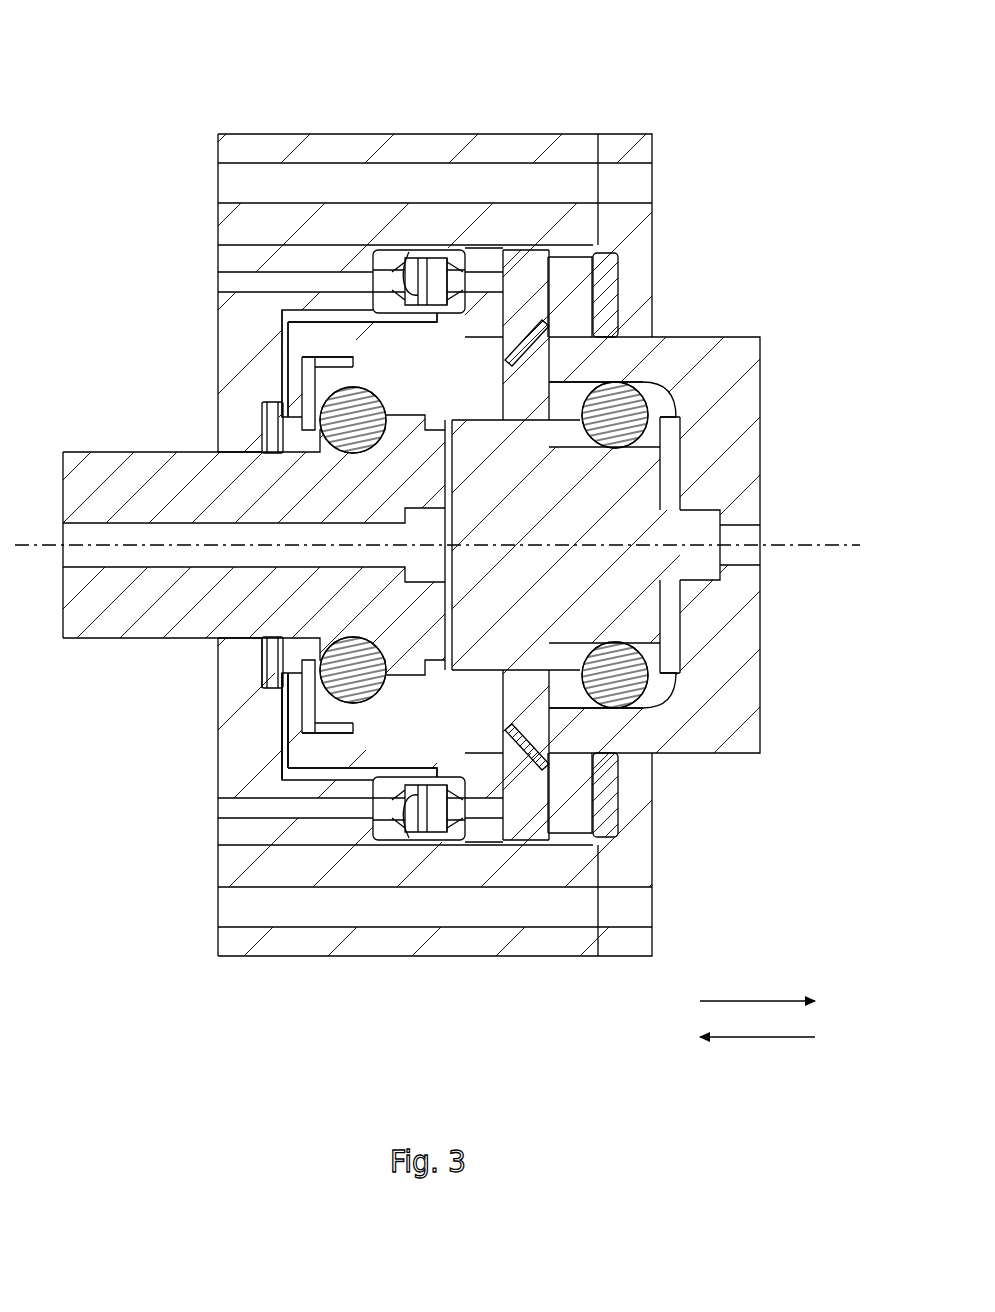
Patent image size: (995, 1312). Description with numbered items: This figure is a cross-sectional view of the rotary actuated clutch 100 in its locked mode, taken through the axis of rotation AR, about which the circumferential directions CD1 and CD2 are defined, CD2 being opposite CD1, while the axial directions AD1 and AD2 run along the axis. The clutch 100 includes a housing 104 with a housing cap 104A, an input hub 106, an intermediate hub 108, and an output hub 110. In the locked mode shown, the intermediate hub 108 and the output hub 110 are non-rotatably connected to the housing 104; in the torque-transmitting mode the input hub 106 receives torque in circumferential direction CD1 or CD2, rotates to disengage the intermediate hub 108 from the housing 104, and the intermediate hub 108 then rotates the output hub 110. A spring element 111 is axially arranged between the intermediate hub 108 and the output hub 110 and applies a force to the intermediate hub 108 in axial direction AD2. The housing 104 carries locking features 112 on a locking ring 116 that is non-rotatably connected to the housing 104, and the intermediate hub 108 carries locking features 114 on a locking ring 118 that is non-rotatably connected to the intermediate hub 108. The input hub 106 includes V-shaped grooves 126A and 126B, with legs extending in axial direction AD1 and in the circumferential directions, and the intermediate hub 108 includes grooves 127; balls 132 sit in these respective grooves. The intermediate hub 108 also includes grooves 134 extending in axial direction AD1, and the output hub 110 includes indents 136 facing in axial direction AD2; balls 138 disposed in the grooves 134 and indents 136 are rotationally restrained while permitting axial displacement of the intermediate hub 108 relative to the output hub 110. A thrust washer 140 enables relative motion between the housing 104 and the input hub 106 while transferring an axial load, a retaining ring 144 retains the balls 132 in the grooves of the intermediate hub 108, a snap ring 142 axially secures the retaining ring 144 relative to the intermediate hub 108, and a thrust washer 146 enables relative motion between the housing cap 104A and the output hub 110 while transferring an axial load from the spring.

The rotary actuated clutch 100 is at (130, 98).
The housing 104 is at (580, 130).
The housing cap 104A is at (658, 218).
The input hub 106 is at (100, 447).
The intermediate hub 108 is at (508, 306).
The output hub 110 is at (766, 421).
The spring element 111 is at (550, 333).
The locking features 112 is at (412, 296).
The locking features 114 is at (411, 255).
The locking ring 116 is at (368, 266).
The locking ring 118 is at (449, 258).
The V-shaped groove 126A is at (334, 454).
The V-shaped groove 126B is at (298, 722).
The grooves 127 is at (338, 380).
The balls 132 is at (370, 380).
The grooves 134 is at (576, 456).
The indents 136 is at (662, 383).
The balls 138 is at (624, 379).
The thrust washer 140 is at (259, 687).
The snap ring 142 is at (303, 739).
The retaining ring 144 is at (336, 716).
The thrust washer 146 is at (625, 805).
The circumferential direction CD1 is at (813, 582).
The circumferential direction CD2 is at (825, 582).
The axis of rotation AR is at (848, 550).
The axial direction AD1 is at (738, 1001).
The axial direction AD2 is at (757, 1037).